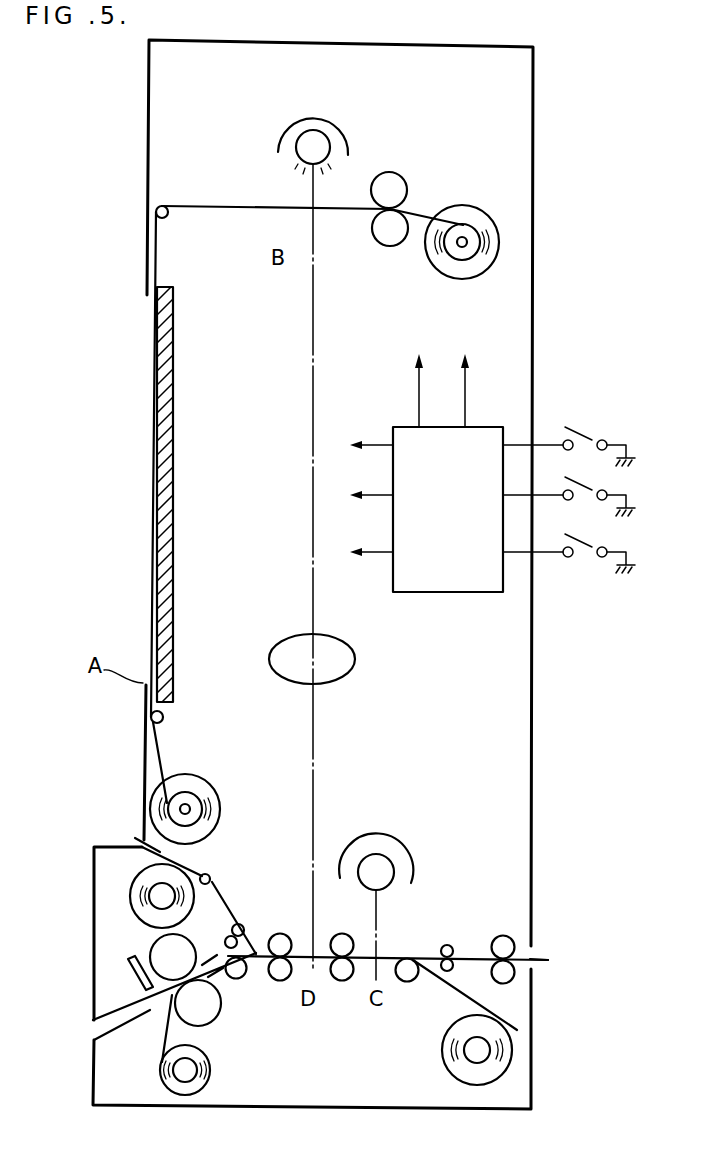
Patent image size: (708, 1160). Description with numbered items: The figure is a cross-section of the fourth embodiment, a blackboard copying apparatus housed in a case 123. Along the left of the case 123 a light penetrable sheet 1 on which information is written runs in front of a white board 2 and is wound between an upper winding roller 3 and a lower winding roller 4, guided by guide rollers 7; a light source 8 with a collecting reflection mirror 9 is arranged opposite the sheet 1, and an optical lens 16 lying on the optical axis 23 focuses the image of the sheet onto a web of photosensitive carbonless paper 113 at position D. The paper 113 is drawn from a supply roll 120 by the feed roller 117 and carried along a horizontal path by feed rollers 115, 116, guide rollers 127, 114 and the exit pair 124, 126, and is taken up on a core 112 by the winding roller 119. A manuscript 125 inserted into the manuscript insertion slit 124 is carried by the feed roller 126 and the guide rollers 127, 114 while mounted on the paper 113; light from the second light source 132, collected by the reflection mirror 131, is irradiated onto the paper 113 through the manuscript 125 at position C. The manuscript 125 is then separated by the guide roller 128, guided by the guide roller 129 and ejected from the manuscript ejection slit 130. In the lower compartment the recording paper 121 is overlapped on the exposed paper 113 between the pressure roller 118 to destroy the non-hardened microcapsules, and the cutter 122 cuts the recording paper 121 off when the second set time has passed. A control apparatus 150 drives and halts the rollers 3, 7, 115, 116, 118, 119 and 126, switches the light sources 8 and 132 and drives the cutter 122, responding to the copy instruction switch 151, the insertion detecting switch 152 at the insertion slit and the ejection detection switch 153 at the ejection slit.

The light penetrable sheet 1 is at (152, 553).
The white board 2 is at (175, 458).
The winding roller 3 is at (477, 206).
The winding roller 4 is at (213, 786).
The guide roller 7 is at (166, 218).
The light source 8 is at (297, 152).
The reflection mirror 9 is at (340, 122).
The optical lens 16 is at (345, 670).
The optical axis 23 is at (313, 515).
The take-up core 112 is at (468, 1058).
The photosensitive carbonless paper 113 is at (517, 1030).
The guide roller 114 is at (408, 982).
The feed roller 115 is at (342, 981).
The feed roller 116 is at (280, 934).
The guide roller 117 is at (244, 977).
The pressure roller 118 is at (212, 1020).
The winding roller 119 is at (195, 1073).
The film roll 120 is at (152, 893).
The recording paper 121 is at (157, 942).
The cutter 122 is at (132, 970).
The case 123 is at (533, 700).
The manuscript insertion slit 124 is at (530, 953).
The manuscript 125 is at (548, 962).
The feed roller 126 is at (510, 980).
The guide roller 127 is at (447, 945).
The guide roller 128 is at (240, 926).
The guide roller 129 is at (209, 876).
The manuscript ejection slit 130 is at (140, 837).
The reflection mirror 131 is at (400, 842).
The light source 132 is at (393, 887).
The control apparatus 150 is at (437, 594).
The copy instruction switch 151 is at (590, 437).
The insertion detecting switch 152 is at (590, 485).
The ejection detection switch 153 is at (582, 557).